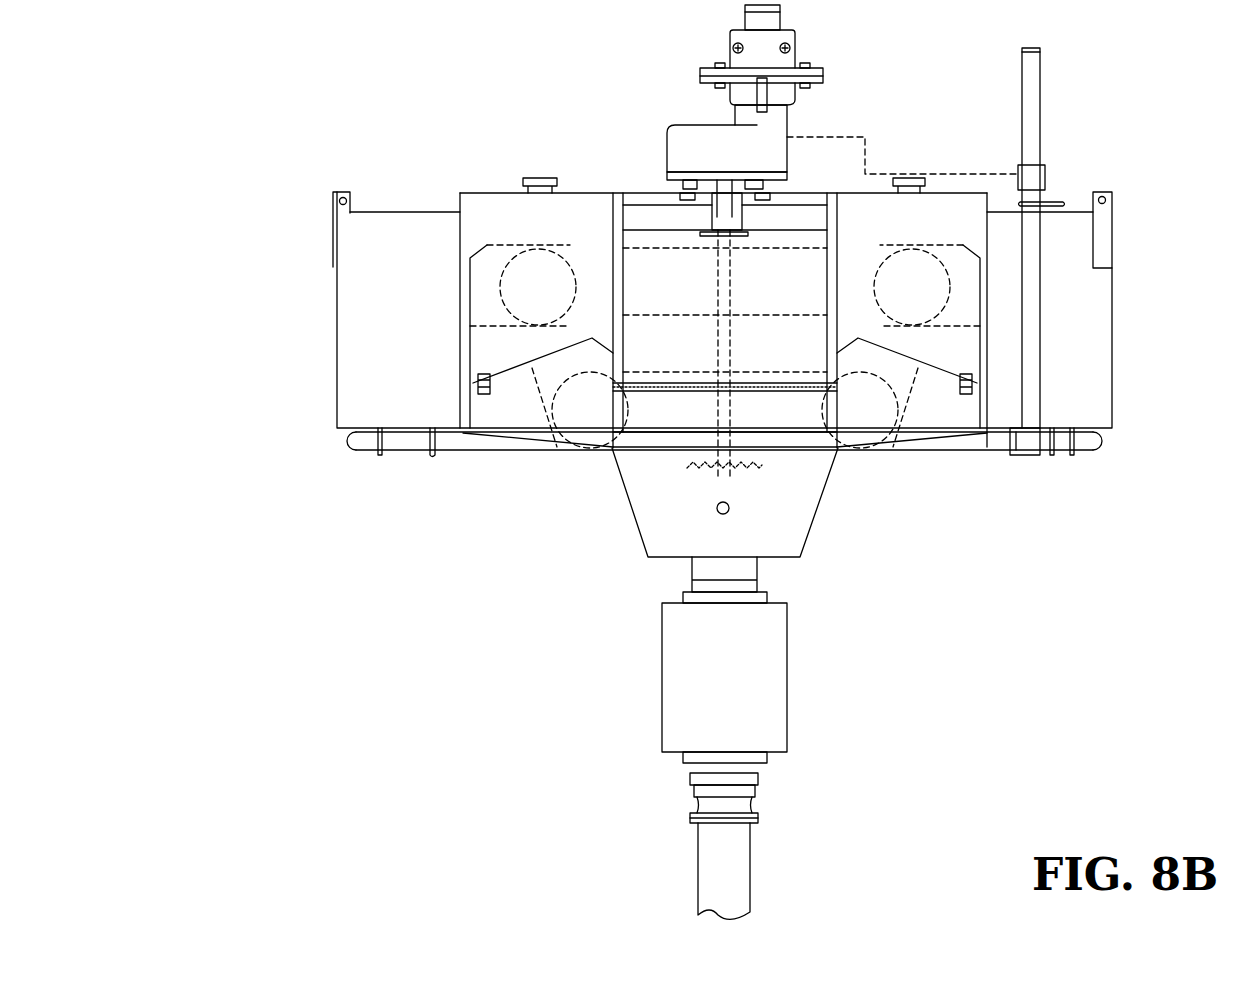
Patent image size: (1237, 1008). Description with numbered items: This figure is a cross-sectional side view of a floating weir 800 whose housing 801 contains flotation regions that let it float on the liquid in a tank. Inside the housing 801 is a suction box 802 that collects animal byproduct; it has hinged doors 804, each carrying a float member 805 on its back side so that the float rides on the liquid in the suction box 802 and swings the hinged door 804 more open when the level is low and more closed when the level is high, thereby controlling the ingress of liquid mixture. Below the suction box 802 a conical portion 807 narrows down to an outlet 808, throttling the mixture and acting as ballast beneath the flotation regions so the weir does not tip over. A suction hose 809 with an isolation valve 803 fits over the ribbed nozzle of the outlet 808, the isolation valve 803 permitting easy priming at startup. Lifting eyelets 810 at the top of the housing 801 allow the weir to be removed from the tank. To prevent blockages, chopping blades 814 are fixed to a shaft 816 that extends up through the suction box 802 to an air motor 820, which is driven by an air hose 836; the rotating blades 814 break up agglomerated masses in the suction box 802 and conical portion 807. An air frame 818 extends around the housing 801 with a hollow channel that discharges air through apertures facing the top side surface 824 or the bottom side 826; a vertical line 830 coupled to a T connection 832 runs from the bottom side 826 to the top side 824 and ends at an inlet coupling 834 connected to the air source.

The floating weir 800 is at (253, 403).
The housing 801 is at (337, 293).
The suction box 802 is at (513, 347).
The isolation valve 803 is at (787, 688).
The hinged door 804 is at (937, 367).
The float member 805 is at (927, 273).
The conical portion 807 is at (642, 537).
The outlet 808 is at (733, 558).
The suction hose 809 is at (738, 870).
The lifting eyelet 810 is at (333, 195).
The chopping blade 814 is at (753, 477).
The shaft 816 is at (713, 412).
The air frame 818 is at (960, 450).
The air motor 820 is at (667, 152).
The top side surface 824 is at (330, 150).
The bottom side 826 is at (1080, 507).
The vertical line 830 is at (1040, 68).
The T connection 832 is at (1030, 443).
The inlet coupling 834 is at (1042, 180).
The air hose 836 is at (888, 174).